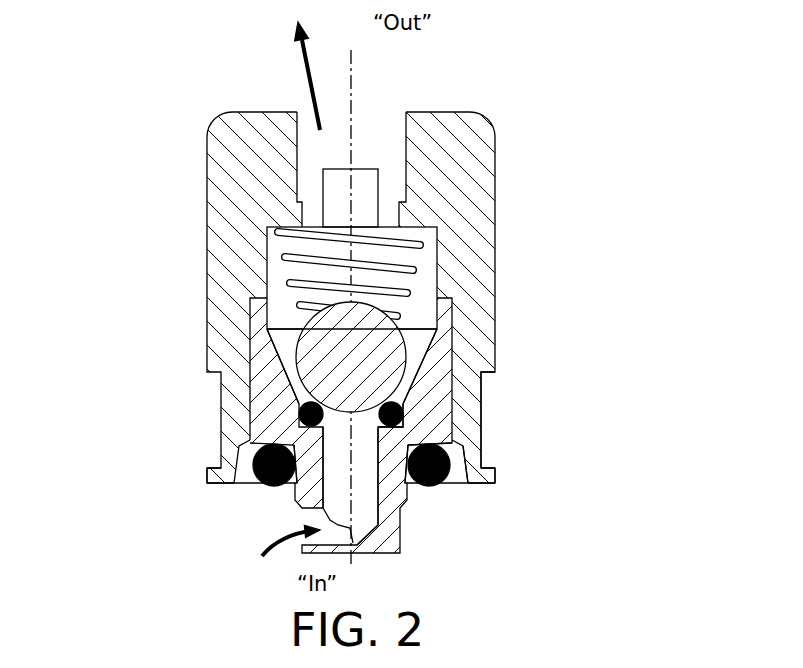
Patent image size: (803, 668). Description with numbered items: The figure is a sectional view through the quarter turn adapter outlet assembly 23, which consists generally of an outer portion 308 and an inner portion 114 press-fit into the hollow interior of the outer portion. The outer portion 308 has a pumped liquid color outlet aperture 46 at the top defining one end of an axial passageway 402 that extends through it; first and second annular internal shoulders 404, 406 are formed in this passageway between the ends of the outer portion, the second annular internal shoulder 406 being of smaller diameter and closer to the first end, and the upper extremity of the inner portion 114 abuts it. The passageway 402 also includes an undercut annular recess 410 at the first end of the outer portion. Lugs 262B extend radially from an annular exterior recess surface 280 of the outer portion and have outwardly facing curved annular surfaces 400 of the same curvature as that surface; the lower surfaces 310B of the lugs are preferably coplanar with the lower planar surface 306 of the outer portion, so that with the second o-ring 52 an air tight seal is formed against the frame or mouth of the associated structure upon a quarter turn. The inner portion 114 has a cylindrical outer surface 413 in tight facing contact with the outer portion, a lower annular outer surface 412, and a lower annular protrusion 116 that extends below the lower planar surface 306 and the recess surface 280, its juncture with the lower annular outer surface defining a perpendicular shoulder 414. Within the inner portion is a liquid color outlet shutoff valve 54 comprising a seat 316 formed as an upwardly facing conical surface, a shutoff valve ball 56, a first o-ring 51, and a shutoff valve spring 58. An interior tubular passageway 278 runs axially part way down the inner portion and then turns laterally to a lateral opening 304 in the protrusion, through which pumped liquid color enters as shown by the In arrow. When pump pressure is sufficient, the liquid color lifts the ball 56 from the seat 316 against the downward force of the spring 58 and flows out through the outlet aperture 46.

The quarter turn adapter outlet assembly 23 is at (512, 142).
The pumped liquid color outlet aperture 46 is at (308, 130).
The first o-ring 51 is at (403, 412).
The second o-ring 52 is at (272, 486).
The liquid color outlet shutoff valve 54 is at (273, 384).
The liquid color outlet shutoff valve ball 56 is at (325, 345).
The liquid color outlet shutoff valve spring 58 is at (445, 288).
The inner portion 114 is at (427, 395).
The lower annular protrusion 116 is at (393, 497).
The lugs 262B is at (490, 472).
The interior tubular passageway 278 is at (342, 498).
The annular exterior recess surface 280 is at (481, 390).
The lateral opening 304 is at (297, 523).
The lower planar surface 306 is at (238, 490).
The outer portion 308 is at (460, 198).
The lower surfaces of lugs 310B is at (481, 484).
The seat 316 is at (412, 332).
The outwardly facing curved annular surfaces 400 is at (497, 483).
The axial passageway 402 is at (385, 123).
The first annular internal shoulder 404 is at (278, 223).
The second annular internal shoulder 406 is at (445, 300).
The undercut annular recess 410 is at (440, 490).
The inner portion lower annular outer surface 412 is at (271, 439).
The cylindrical outer surface 413 is at (452, 420).
The perpendicular shoulder 414 is at (460, 441).